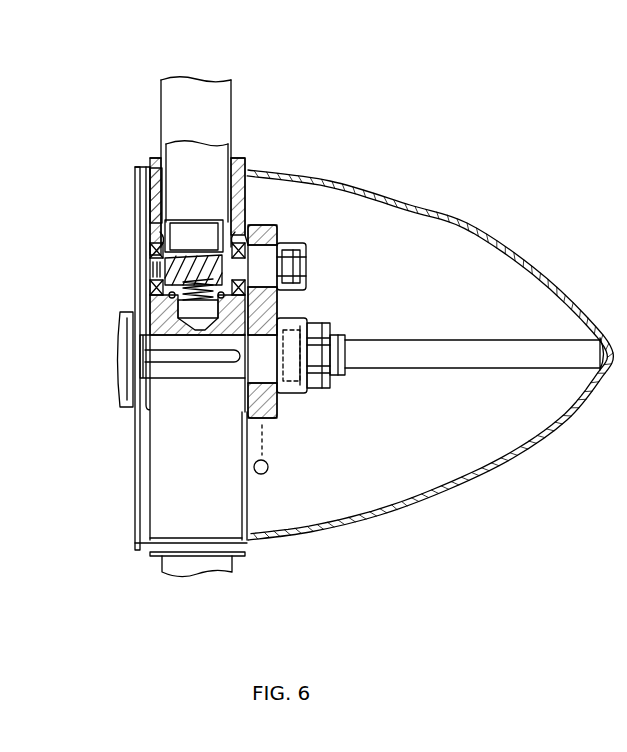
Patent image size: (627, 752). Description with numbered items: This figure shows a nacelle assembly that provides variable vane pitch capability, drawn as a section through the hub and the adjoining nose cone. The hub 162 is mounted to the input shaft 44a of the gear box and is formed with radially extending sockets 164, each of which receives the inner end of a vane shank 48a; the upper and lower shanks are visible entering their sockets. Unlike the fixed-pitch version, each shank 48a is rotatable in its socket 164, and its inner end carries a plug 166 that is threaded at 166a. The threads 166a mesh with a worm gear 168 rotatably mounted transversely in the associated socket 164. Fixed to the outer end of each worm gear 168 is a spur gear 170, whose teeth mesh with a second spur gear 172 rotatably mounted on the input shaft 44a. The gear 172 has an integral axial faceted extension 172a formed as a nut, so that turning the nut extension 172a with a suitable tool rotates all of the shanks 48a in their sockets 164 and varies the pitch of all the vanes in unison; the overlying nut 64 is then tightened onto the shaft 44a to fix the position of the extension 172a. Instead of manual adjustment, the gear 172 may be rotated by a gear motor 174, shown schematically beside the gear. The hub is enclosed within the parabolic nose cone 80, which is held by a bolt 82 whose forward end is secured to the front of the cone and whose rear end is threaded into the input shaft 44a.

The vane shank 48a is at (226, 110).
The socket 164 is at (246, 195).
The spur gear 170 is at (277, 234).
The nose cone 80 is at (466, 225).
The bolt 82 is at (432, 342).
The nut 64 is at (330, 326).
The nut extension 172a is at (288, 327).
The second spur gear 172 is at (280, 400).
The gear motor 174 is at (270, 468).
The plug 166 is at (163, 246).
The worm gear 168 is at (170, 272).
The threads 166a is at (175, 298).
The hub 162 is at (158, 331).
The input shaft 44a is at (155, 371).